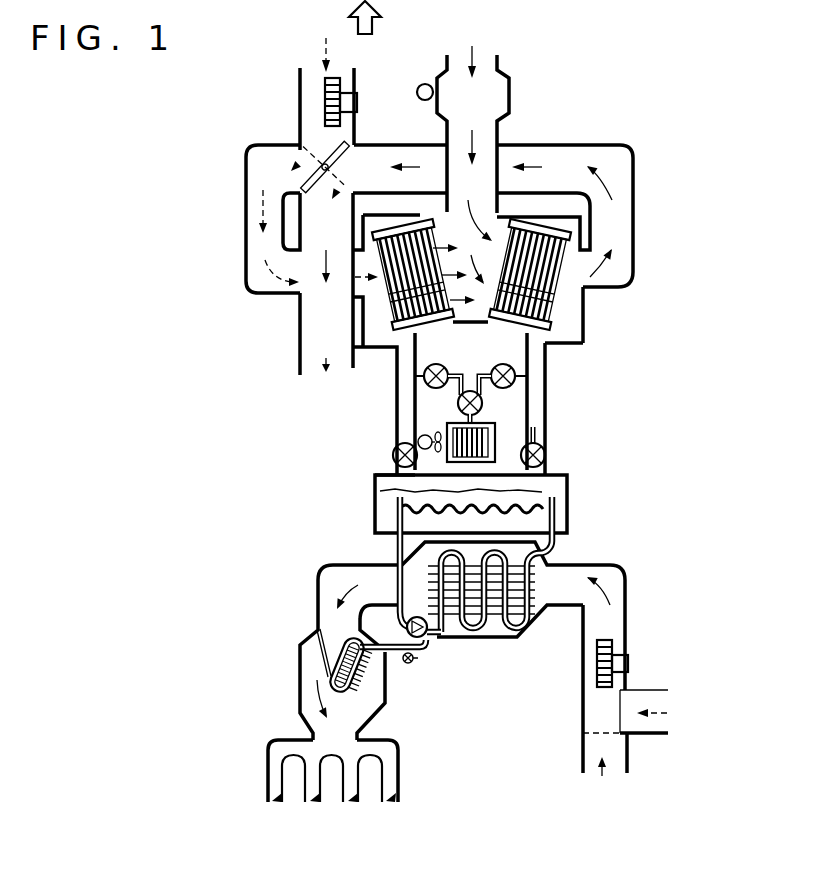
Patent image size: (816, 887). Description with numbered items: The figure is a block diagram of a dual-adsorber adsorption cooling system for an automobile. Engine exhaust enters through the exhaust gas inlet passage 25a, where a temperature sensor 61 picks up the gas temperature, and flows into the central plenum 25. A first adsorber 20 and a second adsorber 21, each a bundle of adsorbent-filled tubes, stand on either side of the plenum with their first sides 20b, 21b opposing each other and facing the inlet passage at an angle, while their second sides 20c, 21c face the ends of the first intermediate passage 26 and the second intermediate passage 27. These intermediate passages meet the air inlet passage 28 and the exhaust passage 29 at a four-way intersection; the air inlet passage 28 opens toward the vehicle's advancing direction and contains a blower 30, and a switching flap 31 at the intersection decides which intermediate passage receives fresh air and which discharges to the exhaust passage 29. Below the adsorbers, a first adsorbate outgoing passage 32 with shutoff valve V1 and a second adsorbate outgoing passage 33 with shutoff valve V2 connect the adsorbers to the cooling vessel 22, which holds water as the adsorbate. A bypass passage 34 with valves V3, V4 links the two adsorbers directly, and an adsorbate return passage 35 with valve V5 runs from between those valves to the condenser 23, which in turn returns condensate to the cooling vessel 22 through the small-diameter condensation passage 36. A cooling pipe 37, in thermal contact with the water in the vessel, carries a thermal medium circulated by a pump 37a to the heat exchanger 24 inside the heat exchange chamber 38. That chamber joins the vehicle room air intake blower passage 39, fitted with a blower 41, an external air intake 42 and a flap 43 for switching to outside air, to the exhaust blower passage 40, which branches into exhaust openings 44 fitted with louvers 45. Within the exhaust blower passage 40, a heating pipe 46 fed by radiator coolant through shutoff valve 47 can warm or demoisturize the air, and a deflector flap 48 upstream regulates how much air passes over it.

The first adsorber 20 is at (334, 298).
The first side of the first adsorber 20b is at (398, 325).
The second side of the first adsorber 20c is at (375, 300).
The second adsorber 21 is at (537, 308).
The first side of the second adsorber 21b is at (583, 295).
The second side of the second adsorber 21c is at (560, 300).
The cooling vessel 22 is at (375, 520).
The condenser 23 is at (500, 440).
The heat exchanger 24 is at (520, 630).
The central plenum 25 is at (483, 255).
The exhaust gas inlet passage 25a is at (487, 110).
The first intermediate passage 26 is at (248, 212).
The second intermediate passage 27 is at (633, 226).
The air inlet passage 28 is at (300, 102).
The exhaust passage 29 is at (395, 284).
The blower 30 is at (345, 90).
The switching flap 31 is at (345, 150).
The first adsorbate outgoing passage 32 is at (397, 428).
The second adsorbate outgoing passage 33 is at (537, 438).
The bypass passage 34 is at (455, 389).
The adsorbate return passage 35 is at (478, 418).
The condensation passage 36 is at (392, 473).
The cooling pipe 37 is at (567, 518).
The pump 37a is at (423, 636).
The heat exchange chamber 38 is at (490, 634).
The vehicle room air intake blower passage 39 is at (625, 578).
The exhaust blower passage 40 is at (318, 585).
The blower 41 is at (612, 645).
The external air intake 42 is at (656, 740).
The flap 43 is at (620, 697).
The exhaust openings 44 is at (270, 780).
The louver 45 is at (277, 800).
The heating pipe 46 is at (372, 690).
The shutoff valve 47 is at (411, 665).
The deflector flap 48 is at (347, 640).
The temperature sensor 61 is at (425, 84).
The shutoff valve V1 is at (393, 455).
The shutoff valve V2 is at (545, 460).
The shutoff valve V3 is at (424, 377).
The shutoff valve V4 is at (515, 380).
The shutoff valve V5 is at (483, 400).